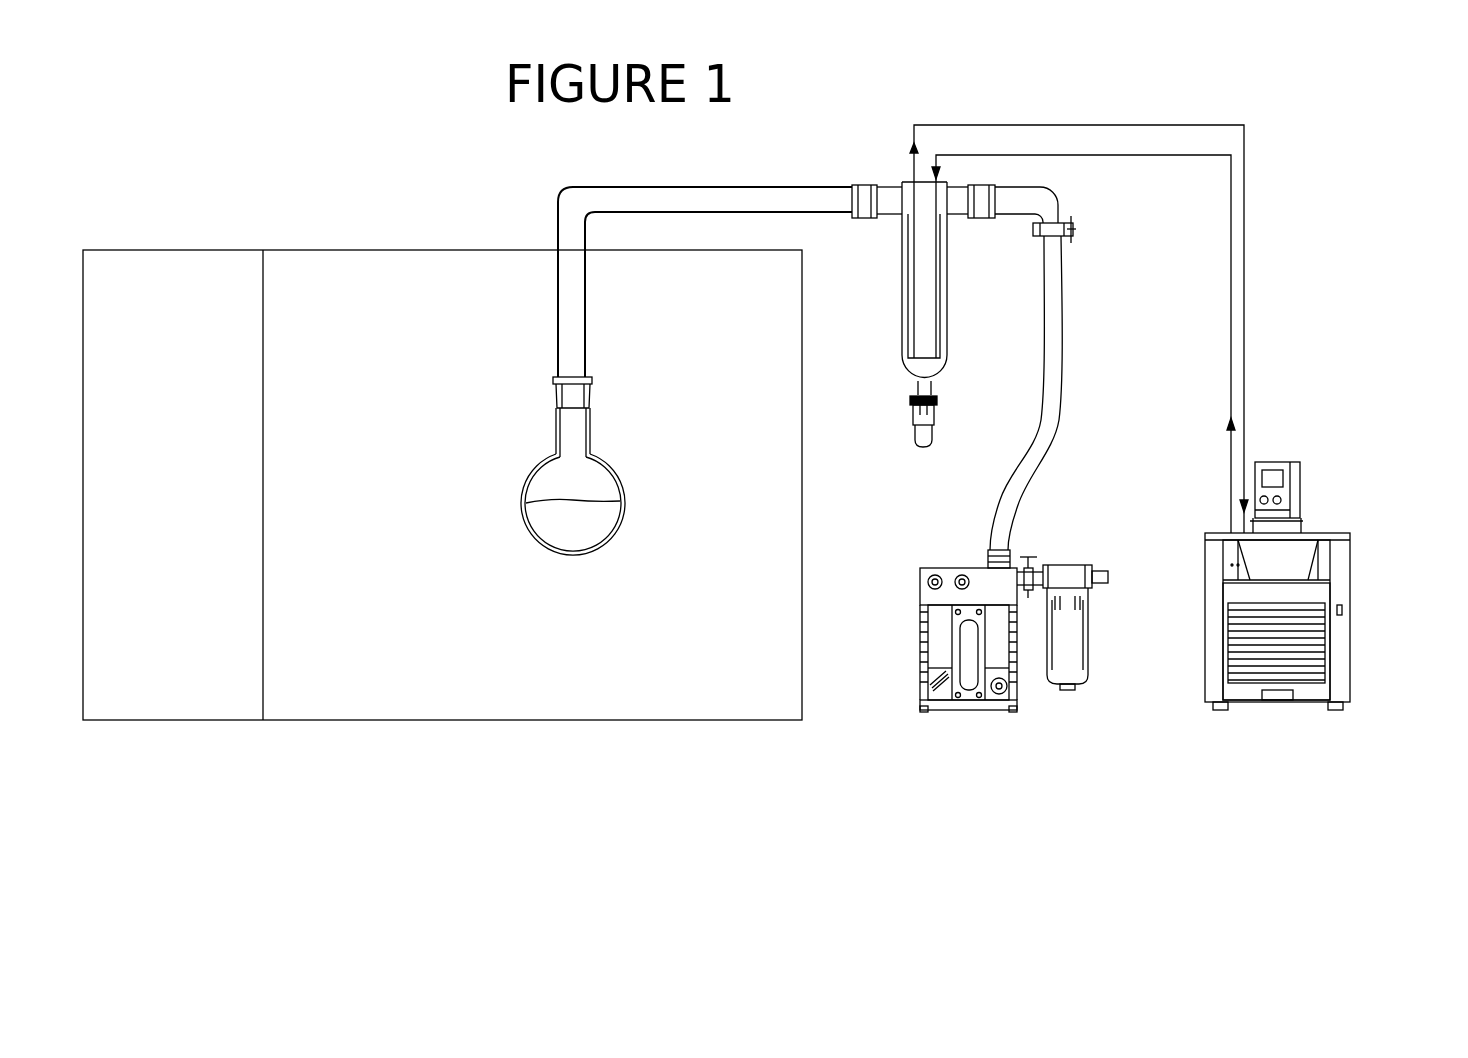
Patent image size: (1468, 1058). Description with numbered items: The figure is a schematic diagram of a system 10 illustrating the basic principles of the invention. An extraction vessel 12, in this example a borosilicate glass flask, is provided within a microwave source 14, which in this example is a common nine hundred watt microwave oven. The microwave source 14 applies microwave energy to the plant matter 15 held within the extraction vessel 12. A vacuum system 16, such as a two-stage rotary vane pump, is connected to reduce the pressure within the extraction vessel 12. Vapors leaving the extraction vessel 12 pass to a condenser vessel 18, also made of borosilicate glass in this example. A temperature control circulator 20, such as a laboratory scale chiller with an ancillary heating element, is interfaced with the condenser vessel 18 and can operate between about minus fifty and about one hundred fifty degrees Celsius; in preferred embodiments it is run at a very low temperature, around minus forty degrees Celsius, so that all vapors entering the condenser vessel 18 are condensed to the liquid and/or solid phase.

The system 10 is at (315, 212).
The extraction vessel 12 is at (518, 458).
The microwave source 14 is at (318, 733).
The plant matter 15 is at (540, 538).
The vacuum system 16 is at (1042, 708).
The condenser vessel 18 is at (965, 322).
The temperature control circulator 20 is at (1367, 622).